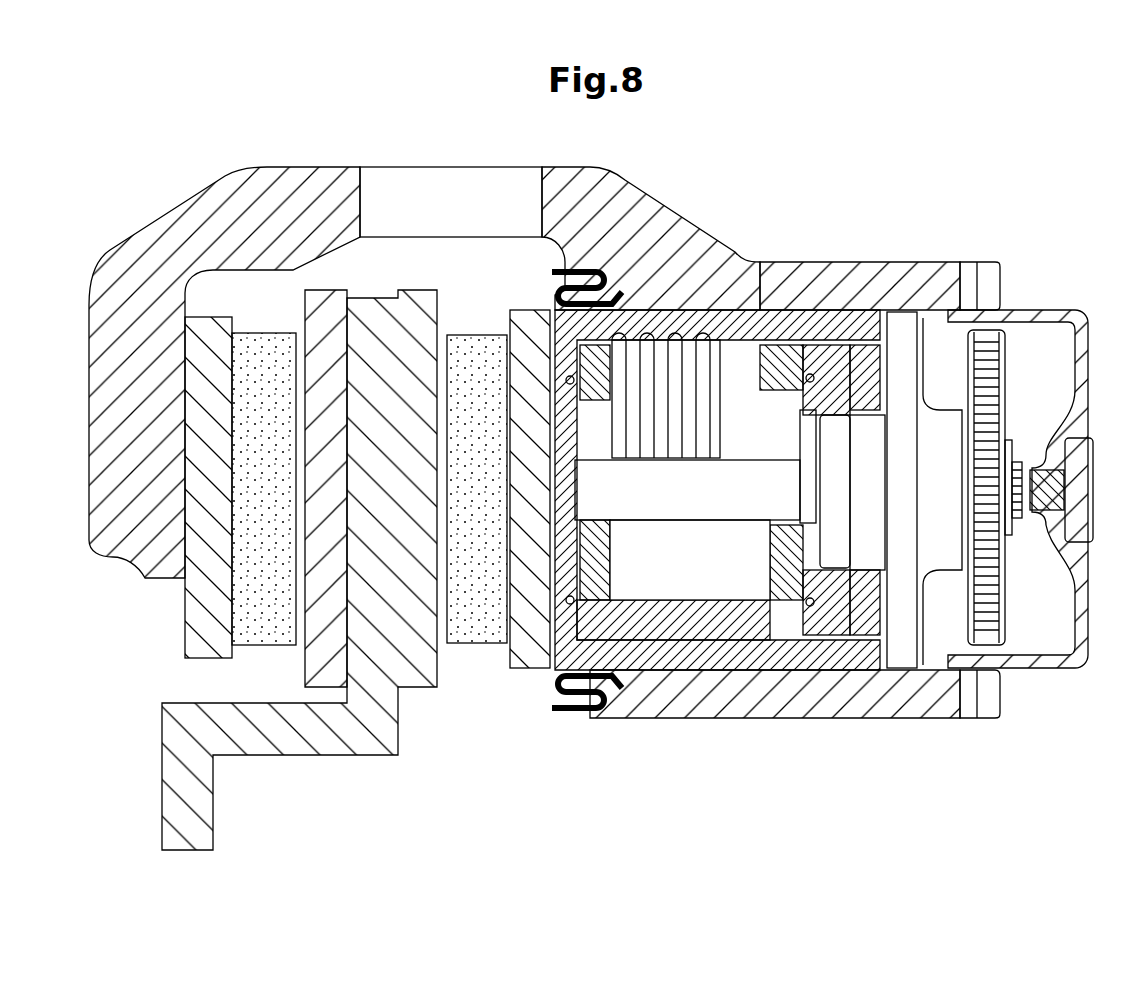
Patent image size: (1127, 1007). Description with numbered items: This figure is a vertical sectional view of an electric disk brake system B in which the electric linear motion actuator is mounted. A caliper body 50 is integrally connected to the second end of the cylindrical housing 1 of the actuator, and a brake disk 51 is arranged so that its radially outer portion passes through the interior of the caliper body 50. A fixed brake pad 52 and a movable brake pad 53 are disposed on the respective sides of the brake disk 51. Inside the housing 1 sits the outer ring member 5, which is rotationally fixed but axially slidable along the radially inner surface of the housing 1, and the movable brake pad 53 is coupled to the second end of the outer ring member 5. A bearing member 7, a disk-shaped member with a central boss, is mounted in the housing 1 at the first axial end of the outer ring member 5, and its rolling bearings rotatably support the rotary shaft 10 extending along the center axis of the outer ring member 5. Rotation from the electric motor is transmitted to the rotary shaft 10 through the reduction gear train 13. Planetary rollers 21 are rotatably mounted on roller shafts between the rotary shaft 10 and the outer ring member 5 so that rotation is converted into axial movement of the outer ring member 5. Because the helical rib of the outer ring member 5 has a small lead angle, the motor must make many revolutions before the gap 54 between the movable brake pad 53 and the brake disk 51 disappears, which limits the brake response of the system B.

The electric disk brake system B is at (172, 203).
The caliper body 50 is at (296, 165).
The housing 1 is at (838, 278).
The outer ring member 5 is at (722, 320).
The bearing member 7 is at (906, 330).
The rotary shaft 10 is at (690, 505).
The reduction gear train 13 is at (1010, 355).
The planetary roller 21 is at (665, 340).
The brake disk 51 is at (380, 697).
The fixed brake pad 52 is at (248, 598).
The movable brake pad 53 is at (498, 413).
The gap 54 is at (462, 350).